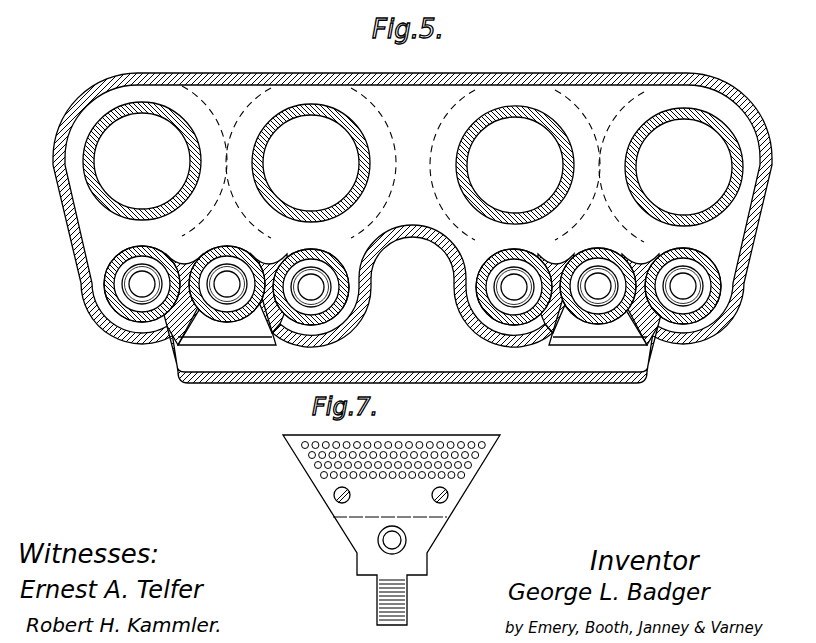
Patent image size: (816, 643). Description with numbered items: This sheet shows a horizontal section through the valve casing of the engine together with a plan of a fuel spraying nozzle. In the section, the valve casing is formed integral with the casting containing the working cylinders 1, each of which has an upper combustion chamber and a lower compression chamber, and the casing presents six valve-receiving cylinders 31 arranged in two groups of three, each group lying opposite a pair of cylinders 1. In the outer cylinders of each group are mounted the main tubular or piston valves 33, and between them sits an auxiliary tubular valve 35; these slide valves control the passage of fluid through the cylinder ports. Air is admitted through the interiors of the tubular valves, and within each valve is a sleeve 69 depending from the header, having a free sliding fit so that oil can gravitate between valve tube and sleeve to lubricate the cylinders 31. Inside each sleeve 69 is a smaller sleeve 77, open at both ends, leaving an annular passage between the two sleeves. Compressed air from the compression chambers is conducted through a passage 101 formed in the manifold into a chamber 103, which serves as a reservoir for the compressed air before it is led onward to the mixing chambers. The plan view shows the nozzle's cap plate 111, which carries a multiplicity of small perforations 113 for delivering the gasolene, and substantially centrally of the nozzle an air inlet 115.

In FIG. 5, the cylinder 1 is at (252, 73).
In FIG. 5, the cylinders 31 is at (122, 315).
In FIG. 5, the main tubular valves 33 is at (113, 285).
In FIG. 5, the auxiliary tubular valve 35 is at (197, 322).
In FIG. 5, the sleeves 69 is at (127, 273).
In FIG. 5, the sleeves 77 is at (203, 253).
In FIG. 5, the passage 101 is at (400, 360).
In FIG. 5, the chamber 103 is at (412, 286).
In FIG. 7, the cap plate 111 is at (373, 506).
In FIG. 7, the perforations 113 is at (477, 455).
In FIG. 7, the air inlet 115 is at (405, 538).